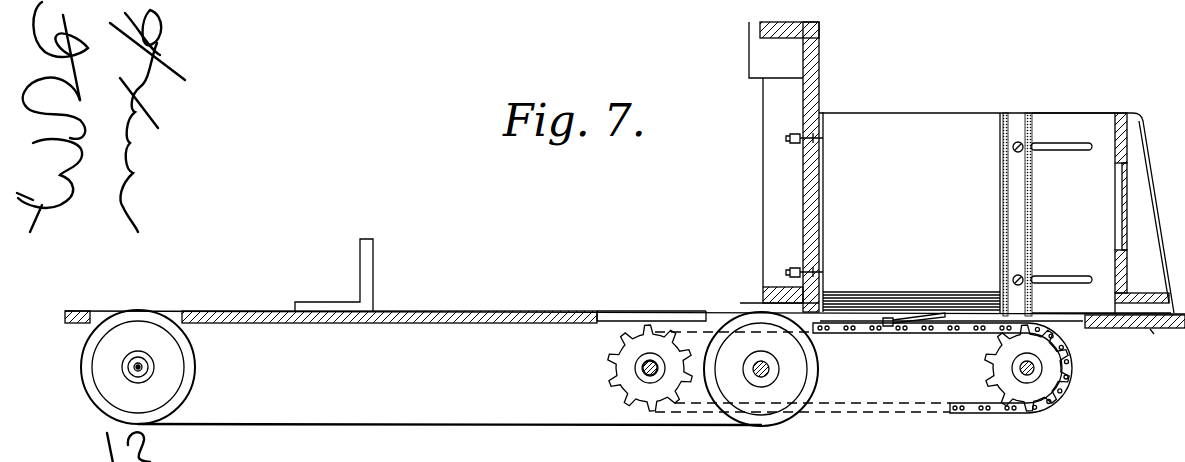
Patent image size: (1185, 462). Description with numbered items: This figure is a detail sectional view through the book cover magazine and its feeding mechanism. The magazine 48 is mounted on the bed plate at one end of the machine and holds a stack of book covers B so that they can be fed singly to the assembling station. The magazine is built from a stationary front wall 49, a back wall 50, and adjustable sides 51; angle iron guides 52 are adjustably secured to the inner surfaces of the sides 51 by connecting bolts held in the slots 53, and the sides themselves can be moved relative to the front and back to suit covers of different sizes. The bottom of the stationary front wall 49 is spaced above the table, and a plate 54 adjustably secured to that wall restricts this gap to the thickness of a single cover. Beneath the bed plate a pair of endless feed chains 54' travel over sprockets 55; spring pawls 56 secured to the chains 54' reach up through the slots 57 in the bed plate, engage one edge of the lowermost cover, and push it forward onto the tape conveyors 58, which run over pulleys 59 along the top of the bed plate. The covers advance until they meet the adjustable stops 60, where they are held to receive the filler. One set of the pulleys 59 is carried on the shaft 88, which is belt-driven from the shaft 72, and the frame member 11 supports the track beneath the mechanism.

The magazine 48 is at (920, 134).
The stationary front wall 49 is at (840, 50).
The back wall 50 is at (1111, 215).
The adjustable sides 51 is at (978, 130).
The angle iron guides 52 is at (989, 211).
The slots 53 is at (1054, 158).
The plate 54 is at (809, 195).
The endless feed chains 54' is at (886, 376).
The sprockets 55 is at (612, 358).
The spring pawls 56 is at (929, 323).
The slots 57 is at (1075, 322).
The tape conveyors 58 is at (639, 306).
The pulleys 59 is at (172, 375).
The stops 60 is at (390, 266).
The frame bar 11 is at (1150, 333).
The shaft 72 is at (645, 372).
The shaft 88 is at (135, 367).
The stack of blanks B is at (930, 287).